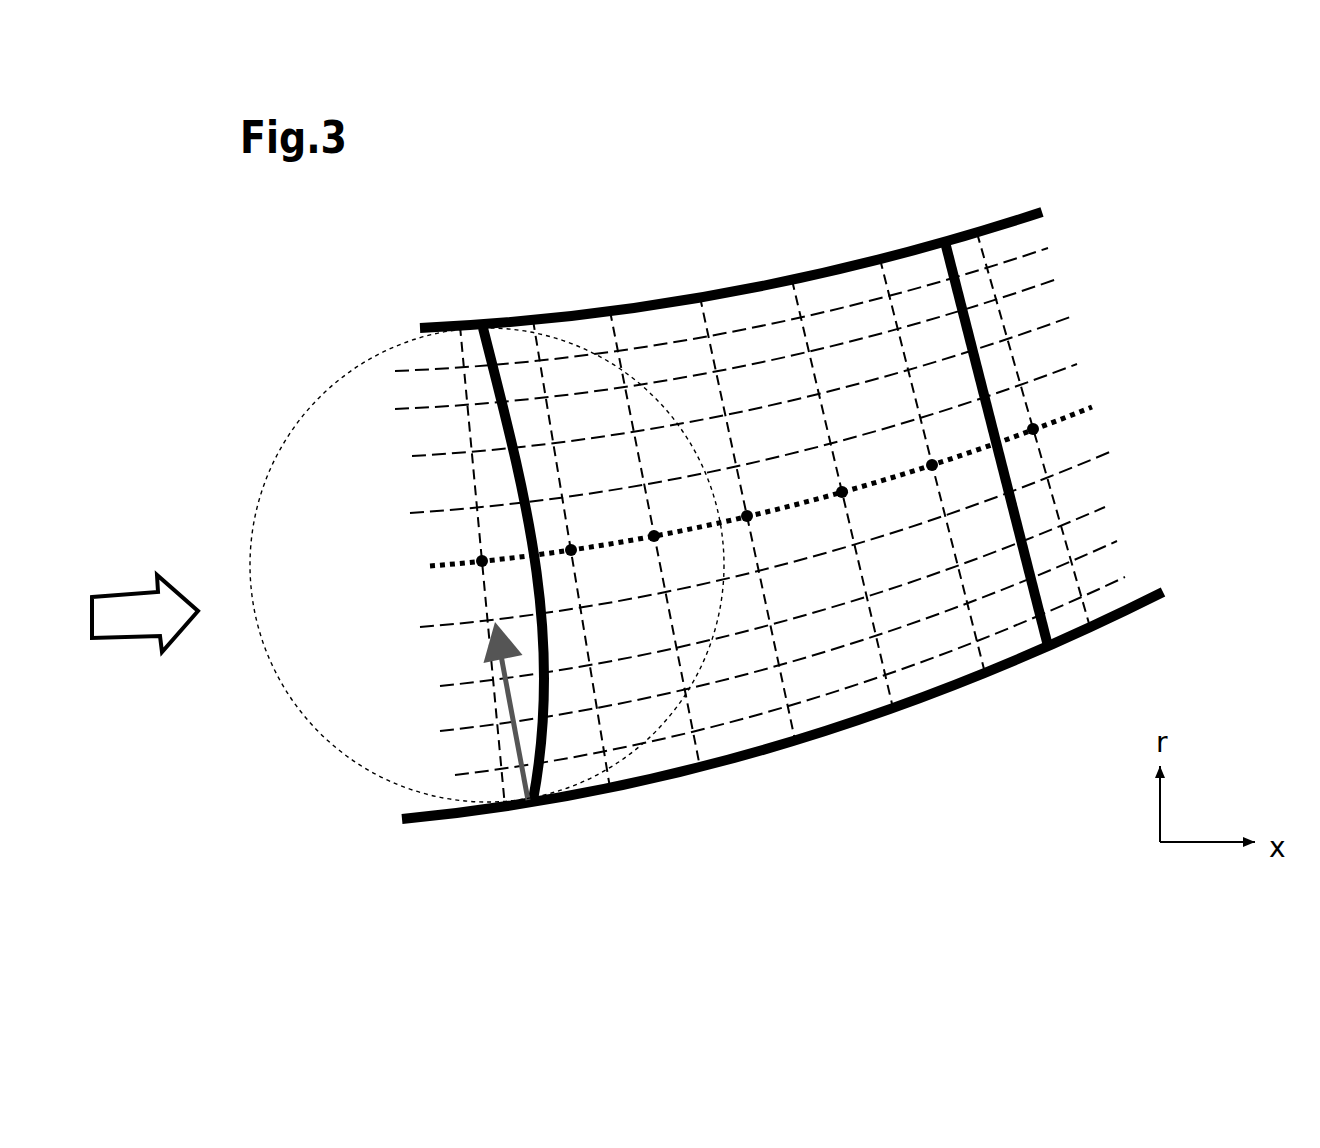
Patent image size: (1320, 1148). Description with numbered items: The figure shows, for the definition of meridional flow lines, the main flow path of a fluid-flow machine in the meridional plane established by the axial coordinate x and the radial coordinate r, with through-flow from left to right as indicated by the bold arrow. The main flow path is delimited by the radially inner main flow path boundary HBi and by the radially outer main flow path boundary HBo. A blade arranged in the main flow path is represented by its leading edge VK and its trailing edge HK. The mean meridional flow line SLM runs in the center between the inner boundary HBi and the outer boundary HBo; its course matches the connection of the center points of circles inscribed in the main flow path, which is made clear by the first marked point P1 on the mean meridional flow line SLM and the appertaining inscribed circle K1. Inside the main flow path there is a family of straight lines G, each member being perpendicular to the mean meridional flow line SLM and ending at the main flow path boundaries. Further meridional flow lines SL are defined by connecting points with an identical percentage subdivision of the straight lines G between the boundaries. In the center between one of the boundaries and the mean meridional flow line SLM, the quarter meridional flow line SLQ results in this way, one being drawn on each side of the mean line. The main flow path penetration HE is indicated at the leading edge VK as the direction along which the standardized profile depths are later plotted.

The radially outer main flow path boundary HBo is at (782, 244).
The radially inner main flow path boundary HBi is at (827, 684).
The leading edge VK is at (531, 600).
The trailing edge HK is at (1025, 478).
The family of straight lines G(k) G is at (947, 225).
The meridional flow lines SL(j) SL is at (1063, 258).
The quarter meridional flow line SLQ is at (710, 519).
The mean meridional flow line SLM is at (705, 504).
The first marked point P1 is at (486, 550).
The main flow path penetration HE is at (470, 711).
The circle K1 is at (487, 565).